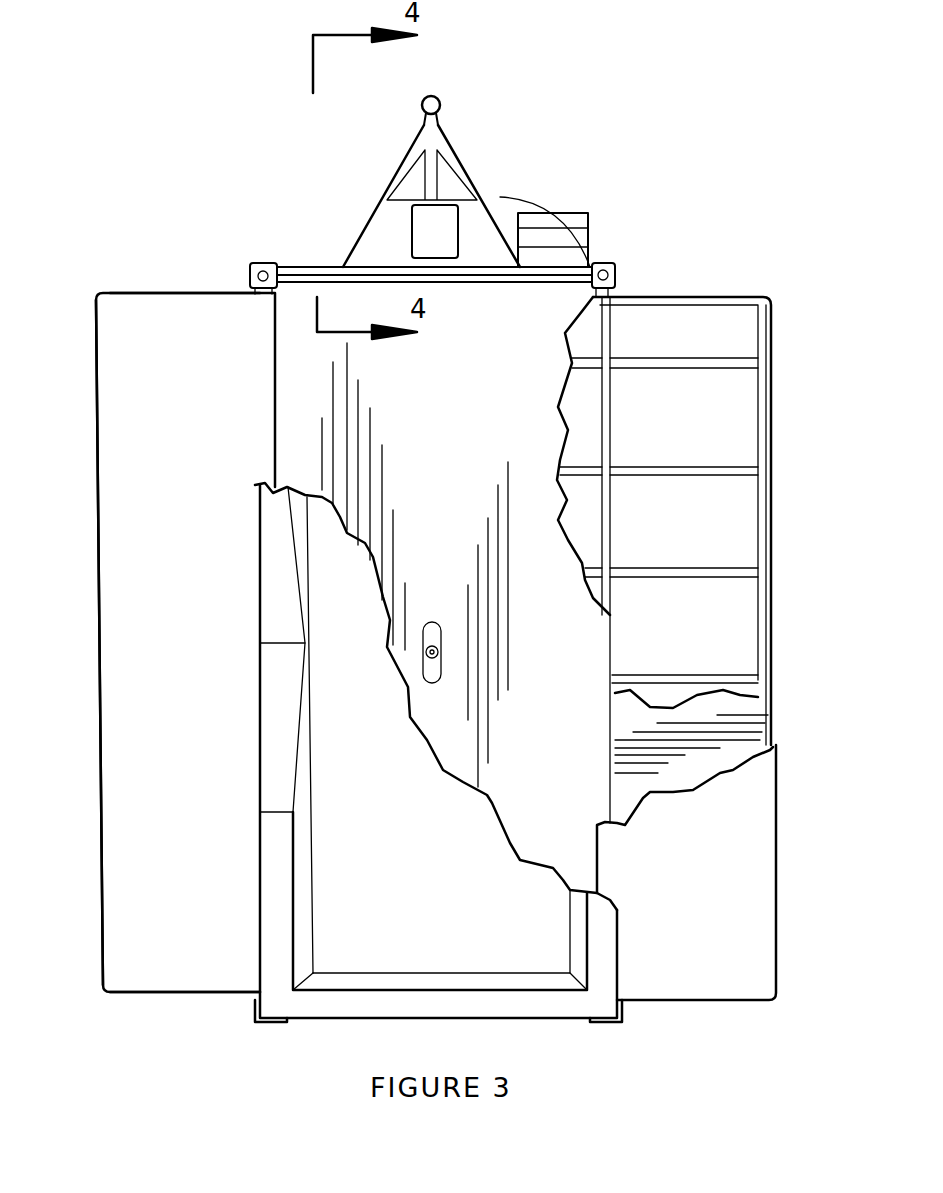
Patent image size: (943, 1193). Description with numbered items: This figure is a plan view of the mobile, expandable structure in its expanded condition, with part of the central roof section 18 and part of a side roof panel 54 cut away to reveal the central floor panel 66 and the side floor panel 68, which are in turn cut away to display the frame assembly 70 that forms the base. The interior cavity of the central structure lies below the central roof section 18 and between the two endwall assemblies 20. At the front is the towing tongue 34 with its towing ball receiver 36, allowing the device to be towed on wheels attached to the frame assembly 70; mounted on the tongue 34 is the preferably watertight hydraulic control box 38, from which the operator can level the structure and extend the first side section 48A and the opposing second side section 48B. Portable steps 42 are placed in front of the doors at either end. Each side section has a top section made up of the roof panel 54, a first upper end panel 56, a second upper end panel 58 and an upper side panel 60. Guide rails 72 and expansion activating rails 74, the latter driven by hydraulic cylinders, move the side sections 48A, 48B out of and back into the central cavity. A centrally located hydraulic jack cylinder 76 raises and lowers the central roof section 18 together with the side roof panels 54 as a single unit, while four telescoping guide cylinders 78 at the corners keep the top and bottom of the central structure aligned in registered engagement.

The central roof section 18 is at (438, 752).
The endwall assemblies 20 is at (308, 267).
The towing tongue 34 is at (455, 148).
The towing ball receiver 36 is at (437, 97).
The hydraulic control box 38 is at (435, 231).
The portable steps 42 is at (522, 265).
The first side section 48A is at (106, 266).
The second side section 48B is at (682, 268).
The roof panel 54 is at (438, 650).
The first upper end panel 56 is at (160, 293).
The second upper end panel 58 is at (153, 992).
The upper side panel 60 is at (97, 690).
The central floor panel 66 is at (415, 565).
The side floor panel 68 is at (720, 750).
The frame assembly 70 is at (723, 280).
The guide rails 72 is at (657, 358).
The expansion activating rails 74 is at (657, 467).
The hydraulic jack cylinder 76 is at (446, 648).
The telescoping guide cylinders 78 is at (247, 263).